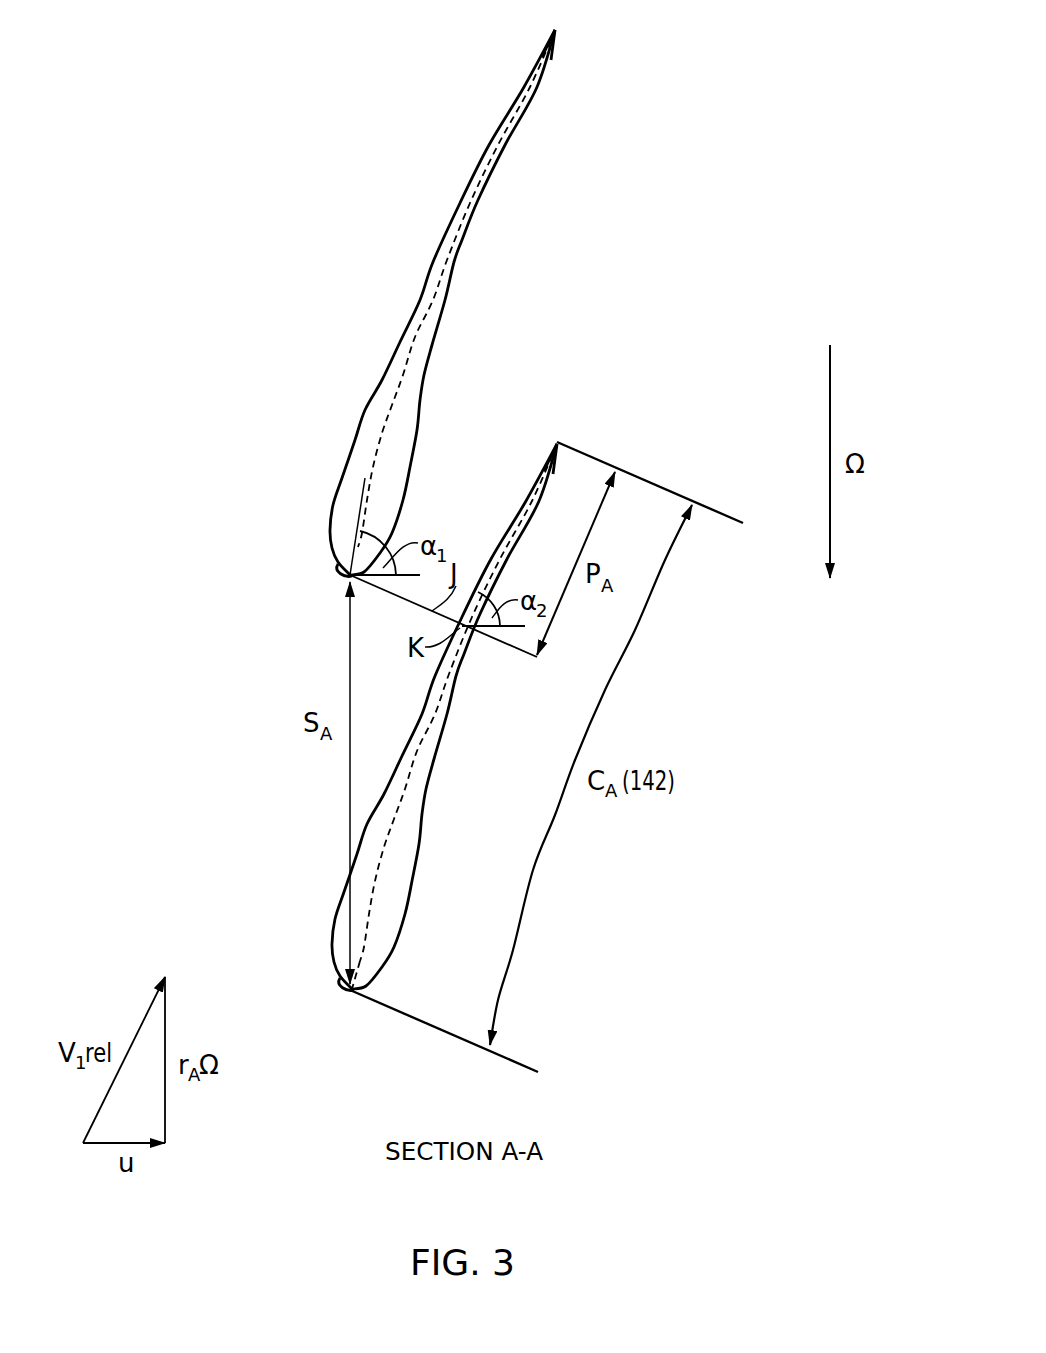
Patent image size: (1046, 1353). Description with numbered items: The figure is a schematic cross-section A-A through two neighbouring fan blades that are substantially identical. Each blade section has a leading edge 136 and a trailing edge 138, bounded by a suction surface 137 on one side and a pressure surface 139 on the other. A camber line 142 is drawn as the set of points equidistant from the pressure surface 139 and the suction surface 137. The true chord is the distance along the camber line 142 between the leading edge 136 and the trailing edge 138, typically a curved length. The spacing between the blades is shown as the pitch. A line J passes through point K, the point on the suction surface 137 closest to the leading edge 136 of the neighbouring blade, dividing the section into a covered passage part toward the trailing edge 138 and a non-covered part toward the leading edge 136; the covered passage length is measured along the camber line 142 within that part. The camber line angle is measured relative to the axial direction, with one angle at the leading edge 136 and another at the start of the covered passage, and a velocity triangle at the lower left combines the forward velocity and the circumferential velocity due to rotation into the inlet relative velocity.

The leading edge 136 is at (347, 578).
The suction surface 137 is at (377, 392).
The trailing edge 138 is at (557, 30).
The pressure surface 139 is at (416, 432).
The camber line 142 is at (413, 338).